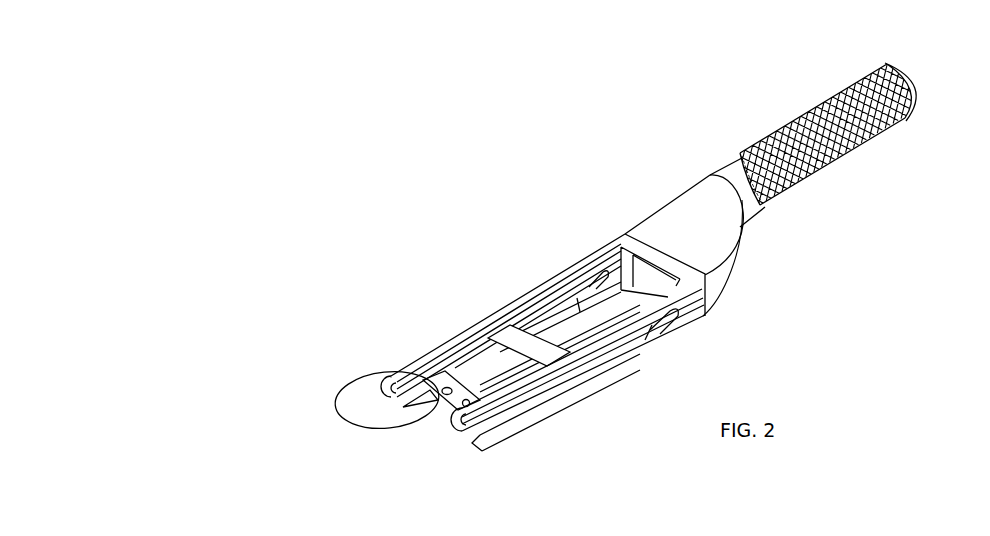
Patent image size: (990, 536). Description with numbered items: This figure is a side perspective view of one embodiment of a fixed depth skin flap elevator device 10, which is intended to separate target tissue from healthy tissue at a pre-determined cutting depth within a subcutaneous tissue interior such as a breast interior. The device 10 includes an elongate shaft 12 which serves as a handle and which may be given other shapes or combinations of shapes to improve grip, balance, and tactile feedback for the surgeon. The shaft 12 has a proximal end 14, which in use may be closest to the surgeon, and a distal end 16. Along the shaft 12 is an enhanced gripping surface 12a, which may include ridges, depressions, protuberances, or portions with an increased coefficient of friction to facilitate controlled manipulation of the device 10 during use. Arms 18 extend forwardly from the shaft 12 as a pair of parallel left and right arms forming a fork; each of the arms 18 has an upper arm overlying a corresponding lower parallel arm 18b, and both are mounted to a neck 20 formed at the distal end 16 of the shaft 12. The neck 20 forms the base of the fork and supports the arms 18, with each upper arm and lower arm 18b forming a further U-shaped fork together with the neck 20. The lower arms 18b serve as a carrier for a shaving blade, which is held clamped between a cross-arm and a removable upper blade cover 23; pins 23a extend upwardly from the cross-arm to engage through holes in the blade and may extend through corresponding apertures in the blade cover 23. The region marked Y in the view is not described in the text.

The fixed depth skin flap elevator device 10 is at (428, 462).
The elongate shaft 12 is at (818, 169).
The enhanced gripping surface 12a is at (768, 196).
The proximal end 14 is at (911, 70).
The distal end 16 is at (712, 172).
The arms 18 is at (489, 306).
The lower arm 18b is at (573, 386).
The neck 20 is at (677, 220).
The upper blade cover 23 is at (433, 386).
The pins 23a is at (466, 402).
The axis Y is at (324, 403).